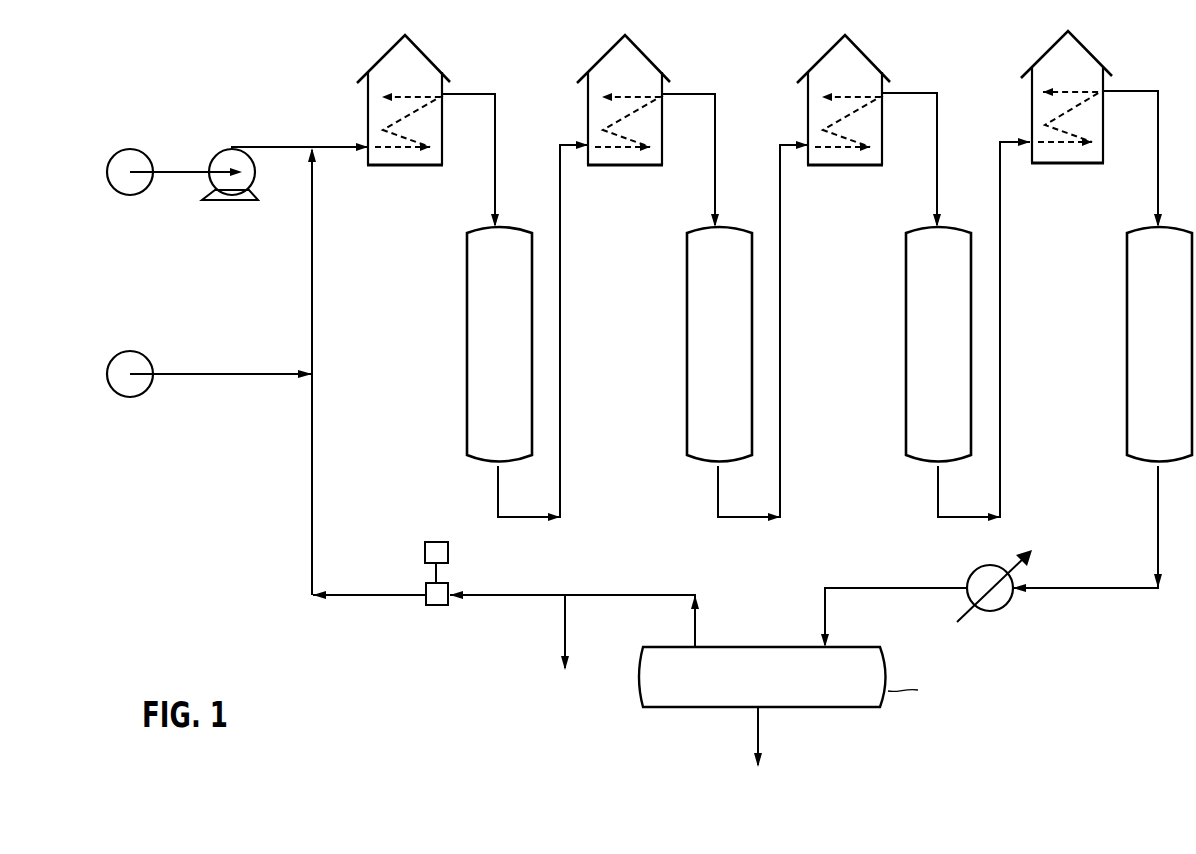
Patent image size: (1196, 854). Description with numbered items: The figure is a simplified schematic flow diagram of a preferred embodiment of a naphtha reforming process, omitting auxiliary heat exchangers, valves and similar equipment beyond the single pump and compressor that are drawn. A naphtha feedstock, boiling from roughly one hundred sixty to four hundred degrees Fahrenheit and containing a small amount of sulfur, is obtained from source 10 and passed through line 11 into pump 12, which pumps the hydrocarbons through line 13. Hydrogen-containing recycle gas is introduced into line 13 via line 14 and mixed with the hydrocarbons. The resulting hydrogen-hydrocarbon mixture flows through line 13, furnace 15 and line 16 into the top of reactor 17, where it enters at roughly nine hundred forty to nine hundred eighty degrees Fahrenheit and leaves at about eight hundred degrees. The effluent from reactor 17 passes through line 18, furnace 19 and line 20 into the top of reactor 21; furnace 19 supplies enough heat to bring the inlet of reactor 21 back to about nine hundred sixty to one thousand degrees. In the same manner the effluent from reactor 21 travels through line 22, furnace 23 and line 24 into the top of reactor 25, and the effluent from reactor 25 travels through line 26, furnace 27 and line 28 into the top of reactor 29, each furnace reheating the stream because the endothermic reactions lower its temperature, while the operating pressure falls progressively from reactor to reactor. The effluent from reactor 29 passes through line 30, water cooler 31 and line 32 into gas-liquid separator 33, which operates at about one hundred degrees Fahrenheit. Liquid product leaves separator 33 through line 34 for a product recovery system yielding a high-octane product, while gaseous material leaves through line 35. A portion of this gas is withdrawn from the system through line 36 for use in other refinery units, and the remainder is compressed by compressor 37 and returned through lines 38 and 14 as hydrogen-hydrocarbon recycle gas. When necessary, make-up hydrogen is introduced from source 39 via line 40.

The source 10 is at (140, 193).
The line 11 is at (174, 170).
The pump 12 is at (252, 178).
The line 13 is at (306, 145).
The line 14 is at (312, 277).
The furnace 15 is at (368, 67).
The line 16 is at (468, 94).
The reactor 17 is at (487, 285).
The line 18 is at (560, 352).
The furnace 19 is at (588, 66).
The line 20 is at (688, 94).
The reactor 21 is at (707, 285).
The line 22 is at (780, 352).
The furnace 23 is at (812, 63).
The line 24 is at (903, 93).
The reactor 25 is at (926, 285).
The line 26 is at (1000, 350).
The furnace 27 is at (1034, 62).
The line 28 is at (1128, 91).
The reactor 29 is at (1147, 285).
The line 30 is at (1158, 505).
The water cooler 31 is at (968, 574).
The line 32 is at (843, 586).
The gas-liquid separator 33 is at (737, 683).
The line 34 is at (758, 728).
The line 35 is at (695, 626).
The line 36 is at (565, 622).
The compressor 37 is at (448, 551).
The line 38 is at (352, 595).
The source 39 is at (150, 358).
The line 40 is at (218, 377).